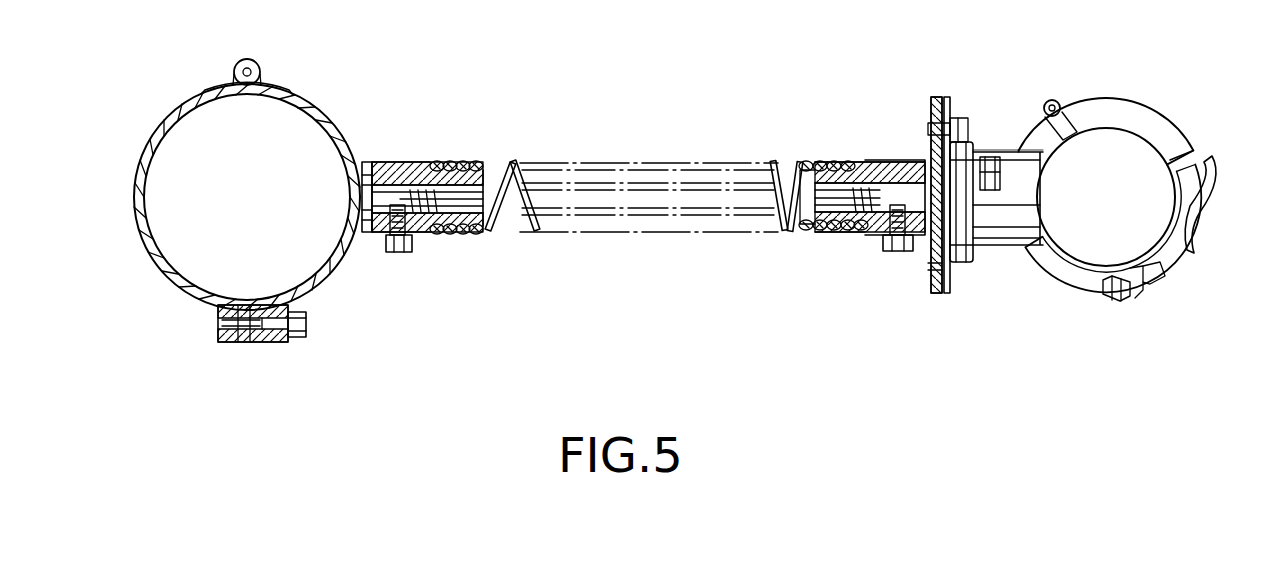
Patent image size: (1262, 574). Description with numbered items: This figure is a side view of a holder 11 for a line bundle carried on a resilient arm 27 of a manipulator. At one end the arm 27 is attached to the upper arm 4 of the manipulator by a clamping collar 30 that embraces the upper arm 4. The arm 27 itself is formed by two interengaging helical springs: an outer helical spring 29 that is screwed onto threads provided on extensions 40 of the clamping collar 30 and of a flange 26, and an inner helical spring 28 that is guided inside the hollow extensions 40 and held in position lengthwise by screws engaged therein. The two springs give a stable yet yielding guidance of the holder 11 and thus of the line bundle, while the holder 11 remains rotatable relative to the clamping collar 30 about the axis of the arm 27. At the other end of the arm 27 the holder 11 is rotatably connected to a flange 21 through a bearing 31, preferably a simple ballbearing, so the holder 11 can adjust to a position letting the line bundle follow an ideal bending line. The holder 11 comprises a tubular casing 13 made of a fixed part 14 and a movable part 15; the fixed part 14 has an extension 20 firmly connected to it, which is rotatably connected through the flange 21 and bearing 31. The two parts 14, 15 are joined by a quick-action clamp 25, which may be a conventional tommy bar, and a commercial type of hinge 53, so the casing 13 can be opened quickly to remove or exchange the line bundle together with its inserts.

The upper arm 4 is at (187, 133).
The clamping collar 30 is at (317, 107).
The extensions 40 is at (402, 176).
The outer helical spring 29 is at (541, 234).
The resilient arm 27 is at (747, 107).
The inner helical spring 28 is at (853, 218).
The flange 26 is at (933, 272).
The flange 21 is at (947, 295).
The bearing 31 is at (967, 153).
The extension 20 is at (1012, 232).
The holder 11 is at (1018, 111).
The tubular casing 13 is at (1188, 90).
The movable part 15 is at (1140, 115).
The fixed part 14 is at (1063, 277).
The hinge 53 is at (1057, 100).
The quick-action clamp 25 is at (1190, 270).